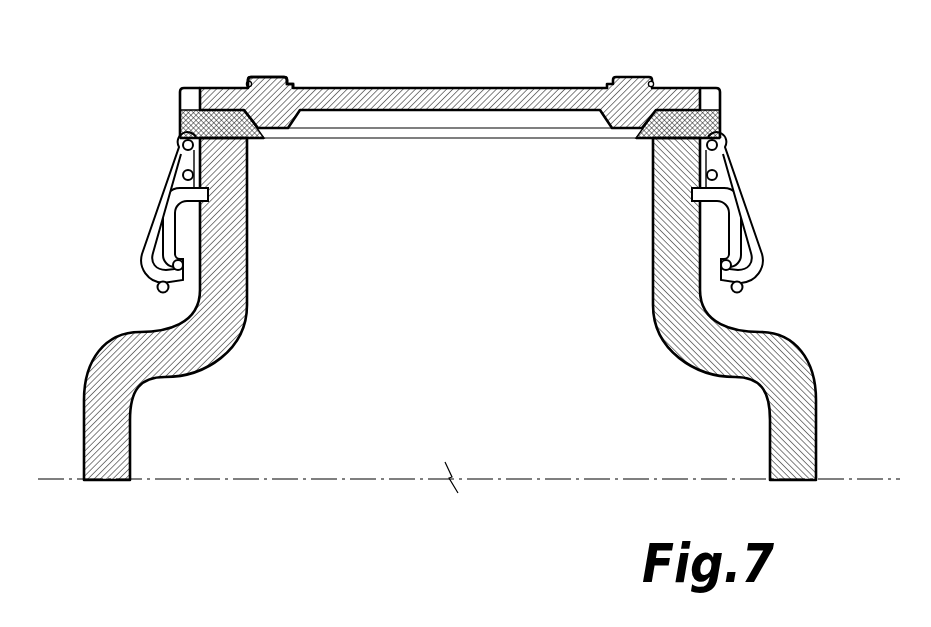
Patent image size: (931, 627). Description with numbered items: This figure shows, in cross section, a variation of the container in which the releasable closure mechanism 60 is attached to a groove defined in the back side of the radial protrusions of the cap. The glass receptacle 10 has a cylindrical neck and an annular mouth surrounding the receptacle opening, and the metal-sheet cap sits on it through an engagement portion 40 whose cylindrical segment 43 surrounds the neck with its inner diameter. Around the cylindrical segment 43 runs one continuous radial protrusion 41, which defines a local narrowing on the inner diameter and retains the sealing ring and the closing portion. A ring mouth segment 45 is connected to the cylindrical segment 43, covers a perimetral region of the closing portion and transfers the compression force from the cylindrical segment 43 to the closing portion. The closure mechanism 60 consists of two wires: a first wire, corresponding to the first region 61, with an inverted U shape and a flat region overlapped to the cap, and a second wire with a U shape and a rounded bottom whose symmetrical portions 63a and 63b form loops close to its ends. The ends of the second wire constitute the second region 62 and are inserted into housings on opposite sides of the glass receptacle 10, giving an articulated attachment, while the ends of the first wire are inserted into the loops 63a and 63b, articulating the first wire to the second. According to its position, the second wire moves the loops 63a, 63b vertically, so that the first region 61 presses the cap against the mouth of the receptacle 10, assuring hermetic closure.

The glass receptacle 10 is at (652, 281).
The engagement portion 40 is at (366, 120).
The radial protrusion 41 is at (180, 146).
The cylindrical segment 43 is at (181, 105).
The ring mouth segment 45 is at (230, 87).
The closure mechanism 60 is at (439, 215).
The first region 61 is at (147, 238).
The second region 62 is at (172, 192).
The loop portion 63a is at (157, 287).
The loop portion 63b is at (744, 288).